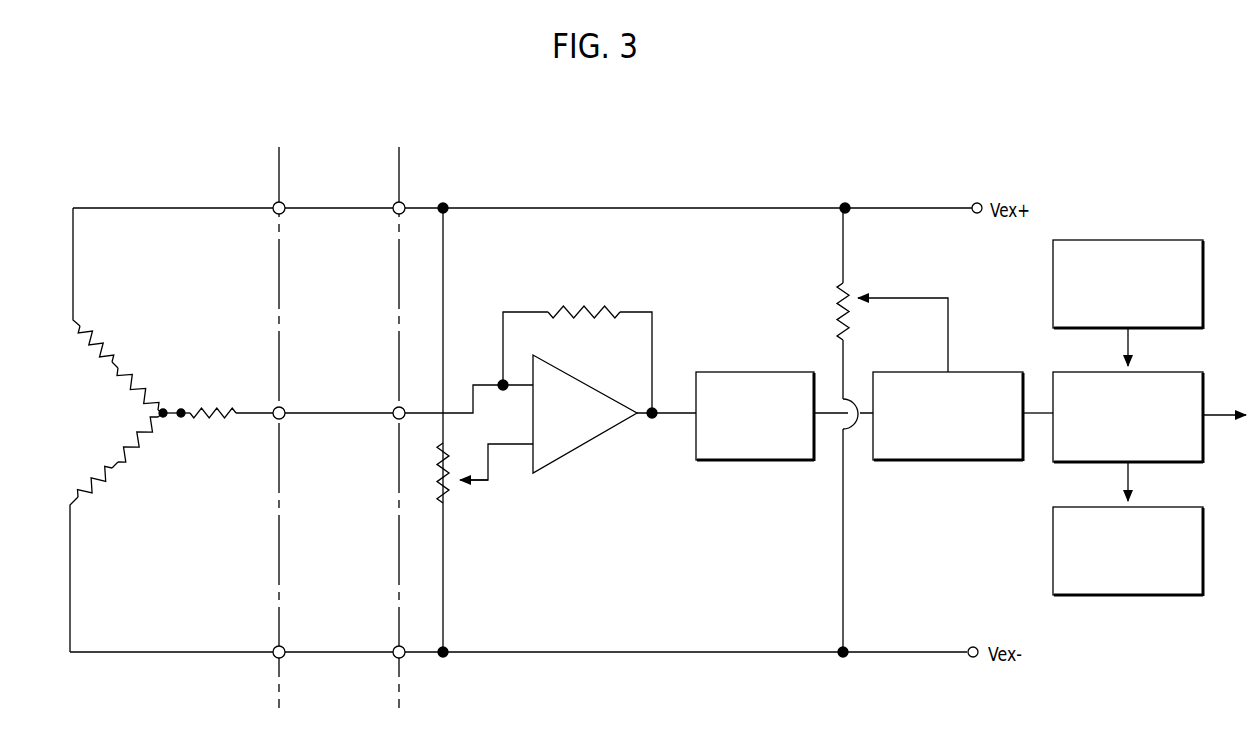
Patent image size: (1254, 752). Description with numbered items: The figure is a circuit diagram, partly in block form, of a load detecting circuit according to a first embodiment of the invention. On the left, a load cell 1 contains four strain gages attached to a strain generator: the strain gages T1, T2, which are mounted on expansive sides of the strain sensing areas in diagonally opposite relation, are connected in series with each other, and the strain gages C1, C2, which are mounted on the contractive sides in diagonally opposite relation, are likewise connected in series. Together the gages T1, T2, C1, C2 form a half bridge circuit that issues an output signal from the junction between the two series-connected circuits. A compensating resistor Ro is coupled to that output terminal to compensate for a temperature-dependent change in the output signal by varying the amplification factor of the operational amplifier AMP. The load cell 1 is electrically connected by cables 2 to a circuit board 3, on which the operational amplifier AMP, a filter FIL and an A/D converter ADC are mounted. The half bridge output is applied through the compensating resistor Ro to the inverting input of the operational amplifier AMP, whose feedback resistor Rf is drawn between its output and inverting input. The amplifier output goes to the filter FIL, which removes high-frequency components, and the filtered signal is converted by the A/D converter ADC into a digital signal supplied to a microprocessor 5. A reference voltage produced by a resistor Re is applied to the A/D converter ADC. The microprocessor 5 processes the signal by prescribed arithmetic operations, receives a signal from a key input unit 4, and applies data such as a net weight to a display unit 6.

The load cell 1 is at (180, 170).
The cables 2 is at (327, 207).
The circuit board 3 is at (517, 207).
The key input unit 4 is at (1150, 240).
The microprocessor 5 is at (1165, 372).
The display unit 6 is at (1157, 507).
The strain gage C1 is at (101, 341).
The strain gage C2 is at (142, 387).
The strain gage T1 is at (142, 441).
The strain gage T2 is at (103, 488).
The compensating resistor Ro is at (213, 400).
The feedback resistor Rf is at (577, 348).
The resistor Re is at (831, 430).
The operational amplifier AMP is at (577, 430).
The filter FIL is at (728, 440).
The A/D converter ADC is at (915, 452).